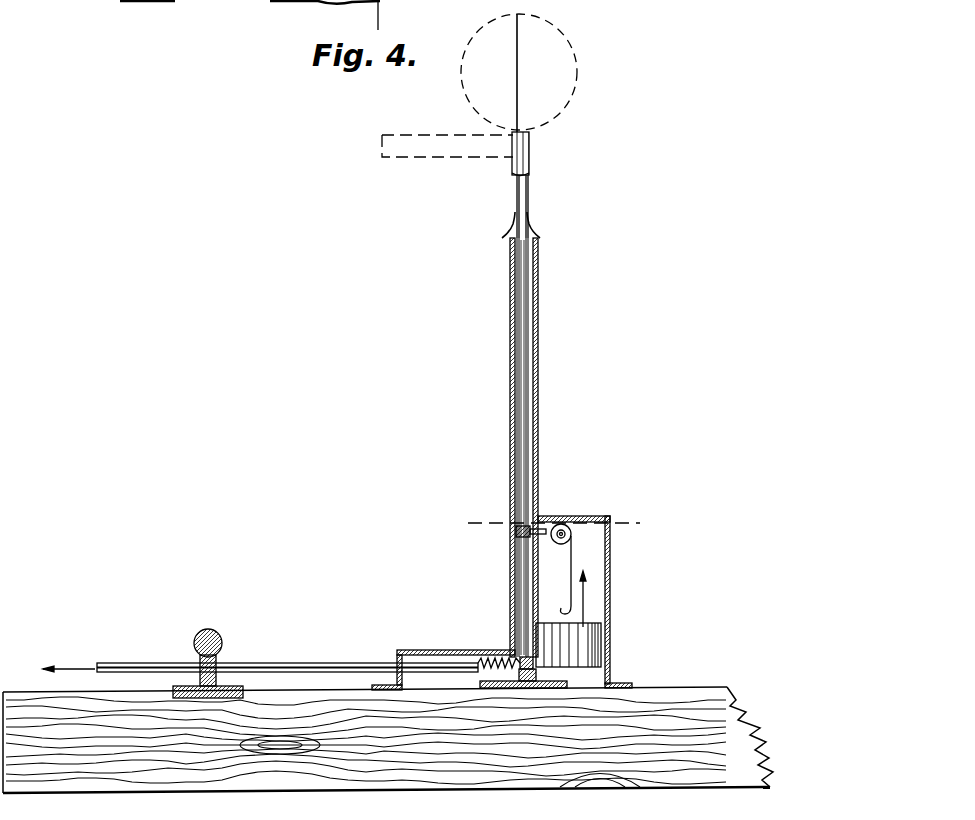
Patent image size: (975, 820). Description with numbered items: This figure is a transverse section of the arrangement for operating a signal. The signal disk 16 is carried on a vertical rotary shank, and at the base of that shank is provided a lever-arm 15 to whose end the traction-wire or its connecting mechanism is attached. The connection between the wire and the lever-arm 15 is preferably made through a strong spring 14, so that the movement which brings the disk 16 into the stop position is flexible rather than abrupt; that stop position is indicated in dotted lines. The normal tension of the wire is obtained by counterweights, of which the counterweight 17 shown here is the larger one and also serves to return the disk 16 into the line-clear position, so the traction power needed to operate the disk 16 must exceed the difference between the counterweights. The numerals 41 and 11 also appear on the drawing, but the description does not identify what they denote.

The dashed attachment bar 41 is at (405, 142).
The disk 16 is at (508, 313).
The counterweight 17 is at (547, 622).
The spring 14 is at (478, 650).
The lever-arm 15 is at (524, 683).
The sliding rod 11 is at (260, 657).